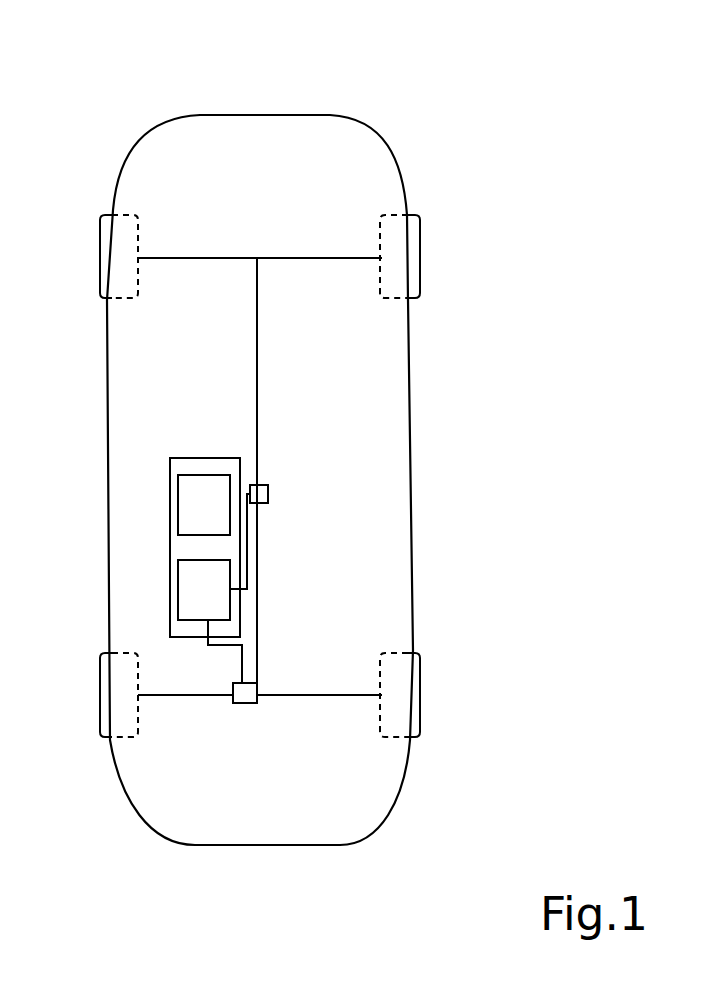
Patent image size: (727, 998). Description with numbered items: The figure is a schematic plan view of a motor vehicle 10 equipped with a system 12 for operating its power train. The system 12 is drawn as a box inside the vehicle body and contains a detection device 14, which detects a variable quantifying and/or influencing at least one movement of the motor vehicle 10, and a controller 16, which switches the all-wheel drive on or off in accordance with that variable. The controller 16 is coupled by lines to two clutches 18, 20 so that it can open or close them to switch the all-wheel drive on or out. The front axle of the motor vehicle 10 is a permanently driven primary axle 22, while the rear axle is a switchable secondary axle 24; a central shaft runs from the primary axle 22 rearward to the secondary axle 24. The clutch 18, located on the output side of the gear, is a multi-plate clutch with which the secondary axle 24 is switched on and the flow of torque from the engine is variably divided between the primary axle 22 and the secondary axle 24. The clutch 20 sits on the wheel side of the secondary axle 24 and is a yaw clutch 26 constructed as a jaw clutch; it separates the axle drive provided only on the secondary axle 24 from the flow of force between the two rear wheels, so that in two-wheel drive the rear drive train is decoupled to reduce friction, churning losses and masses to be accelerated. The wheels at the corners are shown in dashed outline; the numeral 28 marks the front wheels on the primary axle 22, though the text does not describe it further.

The motor vehicle 10 is at (449, 108).
The system 12 is at (210, 517).
The detection device 14 is at (204, 505).
The controller 16 is at (204, 590).
The clutch 18 is at (268, 493).
The clutch 20 is at (241, 704).
The primary axle 22 is at (285, 255).
The secondary axle 24 is at (313, 697).
The yaw clutch 26 is at (124, 700).
The front wheels 28 is at (122, 260).